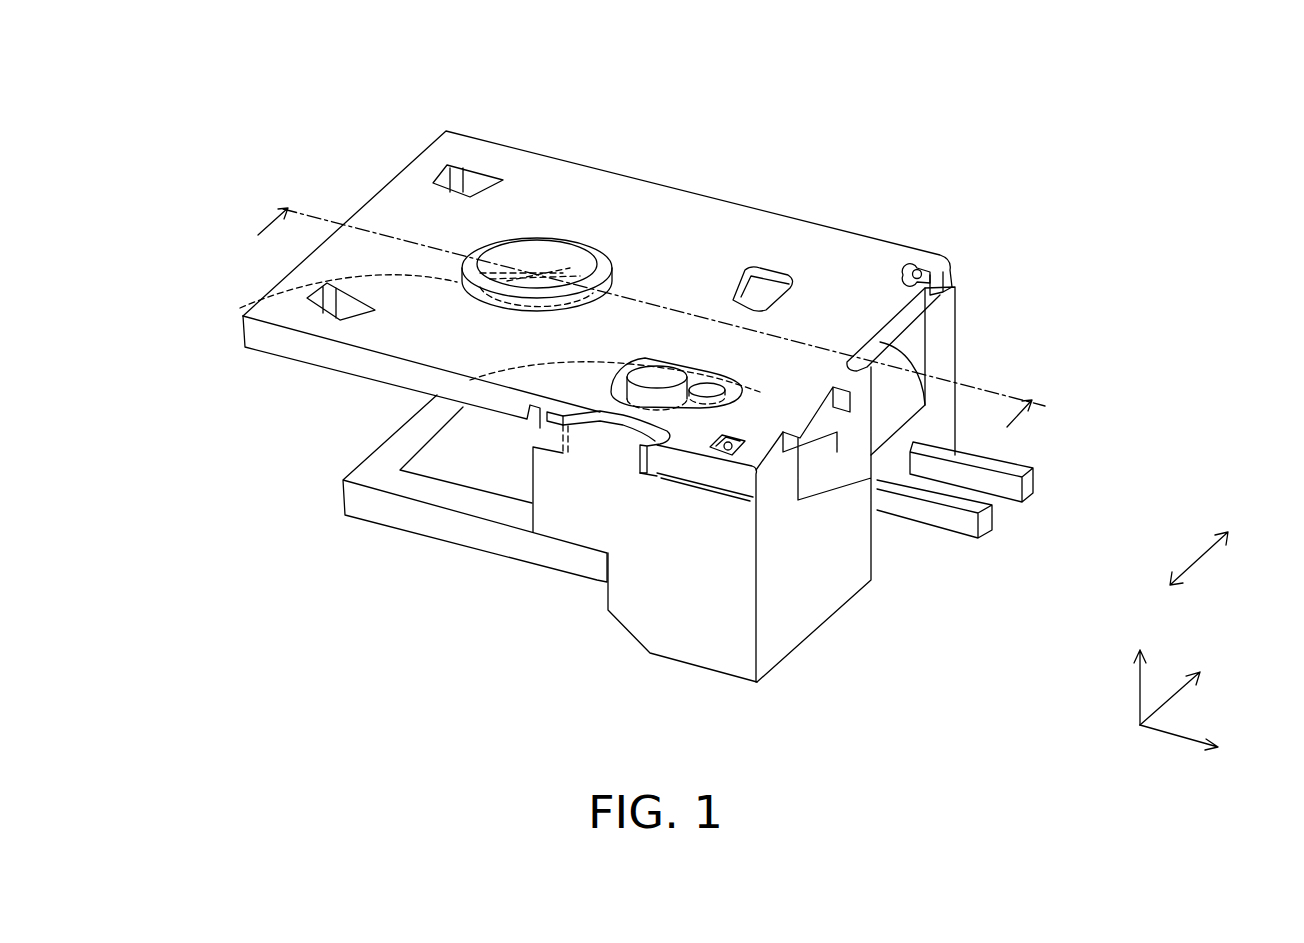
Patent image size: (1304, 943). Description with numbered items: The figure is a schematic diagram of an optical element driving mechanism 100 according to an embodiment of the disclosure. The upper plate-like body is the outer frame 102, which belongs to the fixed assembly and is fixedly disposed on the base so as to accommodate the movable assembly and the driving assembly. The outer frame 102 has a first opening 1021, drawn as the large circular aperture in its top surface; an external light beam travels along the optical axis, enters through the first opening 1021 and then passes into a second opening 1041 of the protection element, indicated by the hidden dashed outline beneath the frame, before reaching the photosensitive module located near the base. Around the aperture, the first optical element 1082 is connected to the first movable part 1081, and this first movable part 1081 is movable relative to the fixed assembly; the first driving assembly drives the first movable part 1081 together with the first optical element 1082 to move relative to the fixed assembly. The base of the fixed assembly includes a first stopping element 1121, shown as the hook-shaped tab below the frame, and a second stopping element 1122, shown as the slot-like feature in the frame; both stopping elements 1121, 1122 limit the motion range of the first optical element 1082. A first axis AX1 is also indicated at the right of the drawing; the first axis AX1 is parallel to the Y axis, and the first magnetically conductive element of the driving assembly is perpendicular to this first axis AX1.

The optical element driving mechanism 100 is at (239, 64).
The outer frame 102 is at (422, 172).
The first opening 1021 is at (557, 244).
The first optical element 1082 is at (600, 267).
The second stopping element 1122 is at (763, 285).
The second opening 1041 is at (240, 308).
The first movable part 1081 is at (470, 380).
The first stopping element 1121 is at (600, 445).
The first axis AX1 is at (1215, 562).